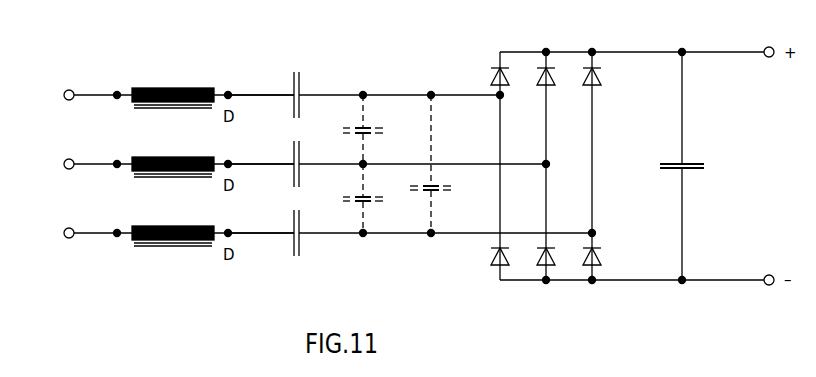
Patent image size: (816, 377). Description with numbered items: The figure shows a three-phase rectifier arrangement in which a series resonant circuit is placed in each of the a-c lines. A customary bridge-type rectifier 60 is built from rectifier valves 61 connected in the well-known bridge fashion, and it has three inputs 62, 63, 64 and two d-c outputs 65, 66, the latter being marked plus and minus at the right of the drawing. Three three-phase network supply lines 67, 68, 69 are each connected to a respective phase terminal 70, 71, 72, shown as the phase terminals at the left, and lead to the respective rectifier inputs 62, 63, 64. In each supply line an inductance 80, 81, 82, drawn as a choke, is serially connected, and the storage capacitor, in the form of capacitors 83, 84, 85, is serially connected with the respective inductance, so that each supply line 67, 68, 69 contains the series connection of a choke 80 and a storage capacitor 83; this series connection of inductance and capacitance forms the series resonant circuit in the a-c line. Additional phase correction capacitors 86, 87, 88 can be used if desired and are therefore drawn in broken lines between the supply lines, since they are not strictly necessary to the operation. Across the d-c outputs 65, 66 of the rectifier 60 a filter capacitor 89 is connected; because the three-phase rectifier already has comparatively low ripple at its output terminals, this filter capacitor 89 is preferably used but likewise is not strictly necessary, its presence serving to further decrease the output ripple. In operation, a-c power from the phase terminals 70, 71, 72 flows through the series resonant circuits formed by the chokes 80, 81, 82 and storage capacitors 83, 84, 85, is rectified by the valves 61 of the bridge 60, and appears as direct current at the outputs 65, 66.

The bridge-type rectifier 60 is at (579, 166).
The rectifier valve 61 is at (601, 70).
The rectifier input 62 is at (500, 97).
The rectifier input 63 is at (545, 168).
The rectifier input 64 is at (594, 231).
The d-c output 65 is at (592, 46).
The d-c output 66 is at (594, 283).
The three-phase network supply line 67 is at (277, 95).
The three-phase network supply line 68 is at (277, 164).
The three-phase network supply line 69 is at (277, 233).
The phase terminal 70 is at (71, 89).
The phase terminal 71 is at (71, 158).
The phase terminal 72 is at (71, 227).
The inductance 80 is at (170, 88).
The inductance 81 is at (168, 157).
The inductance 82 is at (166, 226).
The storage capacitor 83 is at (300, 86).
The storage capacitor 84 is at (300, 158).
The storage capacitor 85 is at (300, 225).
The phase correction capacitor 86 is at (378, 130).
The phase correction capacitor 87 is at (376, 196).
The phase correction capacitor 88 is at (449, 189).
The filter capacitor 89 is at (698, 163).